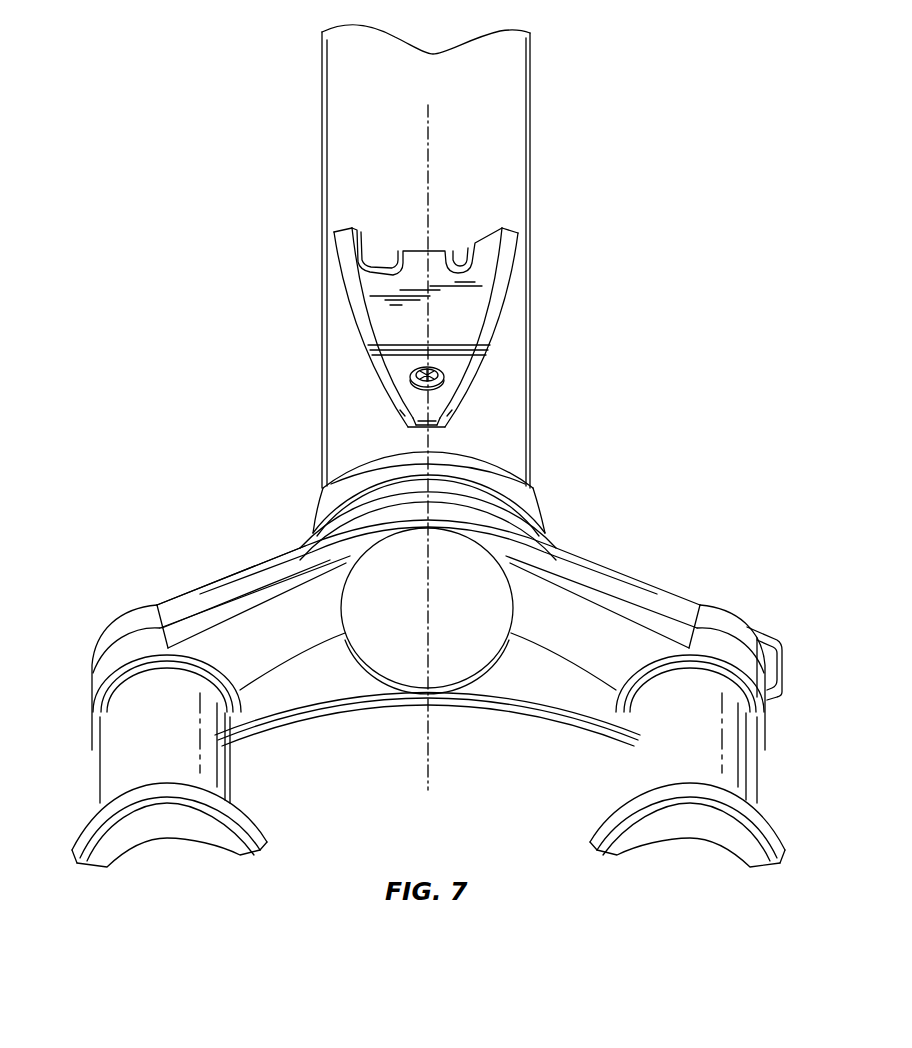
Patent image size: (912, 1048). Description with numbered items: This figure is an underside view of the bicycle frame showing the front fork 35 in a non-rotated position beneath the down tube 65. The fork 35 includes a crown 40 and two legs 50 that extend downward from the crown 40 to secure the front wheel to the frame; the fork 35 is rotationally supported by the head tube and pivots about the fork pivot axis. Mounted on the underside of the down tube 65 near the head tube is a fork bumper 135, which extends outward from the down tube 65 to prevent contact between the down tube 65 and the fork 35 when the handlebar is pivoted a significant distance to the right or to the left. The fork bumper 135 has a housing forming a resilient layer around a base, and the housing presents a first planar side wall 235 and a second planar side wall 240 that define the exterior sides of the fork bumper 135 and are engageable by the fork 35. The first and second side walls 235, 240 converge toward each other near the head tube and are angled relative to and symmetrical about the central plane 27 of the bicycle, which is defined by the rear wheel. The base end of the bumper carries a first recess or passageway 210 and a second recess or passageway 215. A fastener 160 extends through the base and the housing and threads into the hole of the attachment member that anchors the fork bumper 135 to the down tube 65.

The down tube 65 is at (516, 124).
The central plane 27 is at (427, 735).
The fork bumper 135 is at (429, 302).
The first planar side wall 235 is at (348, 302).
The second planar side wall 240 is at (506, 291).
The second recess or passageway 215 is at (380, 257).
The first recess or passageway 210 is at (461, 248).
The fastener 160 is at (445, 383).
The front fork 35 is at (545, 540).
The crown 40 is at (240, 632).
The legs 50 is at (112, 746).